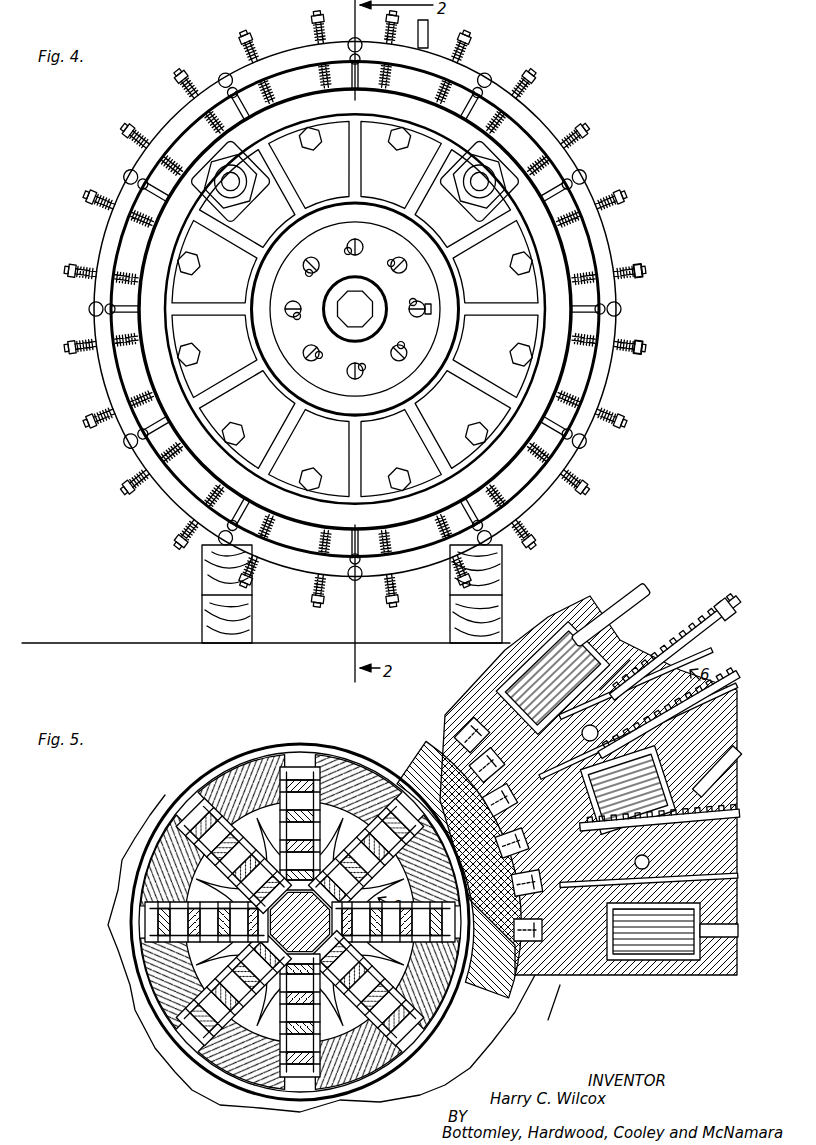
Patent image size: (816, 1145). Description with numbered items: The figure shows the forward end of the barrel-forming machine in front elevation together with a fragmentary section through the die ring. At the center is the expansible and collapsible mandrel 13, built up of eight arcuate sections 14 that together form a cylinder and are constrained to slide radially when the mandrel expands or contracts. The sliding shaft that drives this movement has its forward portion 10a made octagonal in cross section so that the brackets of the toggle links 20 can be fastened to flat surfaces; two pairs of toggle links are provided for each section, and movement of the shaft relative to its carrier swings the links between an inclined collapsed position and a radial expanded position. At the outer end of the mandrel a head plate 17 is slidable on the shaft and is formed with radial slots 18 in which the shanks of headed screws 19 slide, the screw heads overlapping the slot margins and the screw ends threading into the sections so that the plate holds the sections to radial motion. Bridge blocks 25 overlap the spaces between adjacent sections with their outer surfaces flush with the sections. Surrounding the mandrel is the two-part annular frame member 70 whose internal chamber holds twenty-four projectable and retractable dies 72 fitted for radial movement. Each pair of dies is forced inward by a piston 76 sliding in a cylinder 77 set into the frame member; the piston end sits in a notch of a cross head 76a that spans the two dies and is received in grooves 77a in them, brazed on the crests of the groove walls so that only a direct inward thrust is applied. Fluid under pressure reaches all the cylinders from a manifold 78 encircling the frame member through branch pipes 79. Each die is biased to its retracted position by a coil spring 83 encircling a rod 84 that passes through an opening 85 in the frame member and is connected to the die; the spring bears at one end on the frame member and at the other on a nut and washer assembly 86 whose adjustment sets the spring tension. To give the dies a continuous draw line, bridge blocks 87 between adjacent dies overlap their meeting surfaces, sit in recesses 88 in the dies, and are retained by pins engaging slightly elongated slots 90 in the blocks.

In FIG. 4, the forward portion of the shaft 10a is at (356, 306).
In FIG. 5, the forward portion of the shaft 10a is at (258, 910).
In FIG. 5, the mandrel 13 is at (172, 802).
In FIG. 5, the mandrel sections 14 is at (198, 800).
In FIG. 4, the head plate 17 is at (393, 247).
In FIG. 4, the radial slots 18 is at (350, 246).
In FIG. 4, the headed screws 19 is at (420, 318).
In FIG. 5, the toggle links 20 is at (283, 823).
In FIG. 5, the bridge blocks 25 is at (133, 838).
In FIG. 4, the annular frame member 70 is at (447, 118).
In FIG. 5, the annular frame member 70 is at (637, 660).
In FIG. 5, the dies 72 is at (476, 700).
In FIG. 5, the piston 76 is at (546, 650).
In FIG. 5, the cross head or bridging member 76a is at (507, 690).
In FIG. 5, the cylinder 77 is at (540, 622).
In FIG. 5, the grooves 77a is at (546, 1012).
In FIG. 4, the manifold 78 is at (602, 238).
In FIG. 4, the branch pipes 79 is at (580, 190).
In FIG. 5, the branch pipes 79 is at (622, 600).
In FIG. 4, the coil spring 83 is at (627, 268).
In FIG. 5, the coil spring 83 is at (700, 615).
In FIG. 4, the rod 84 is at (525, 114).
In FIG. 5, the rod 84 is at (622, 675).
In FIG. 5, the opening 85 is at (700, 668).
In FIG. 4, the nut and washer assembly 86 is at (644, 281).
In FIG. 5, the nut and washer assembly 86 is at (732, 590).
In FIG. 5, the bridge blocks 87 is at (502, 843).
In FIG. 5, the recesses 88 is at (478, 768).
In FIG. 5, the slots 90 is at (466, 735).